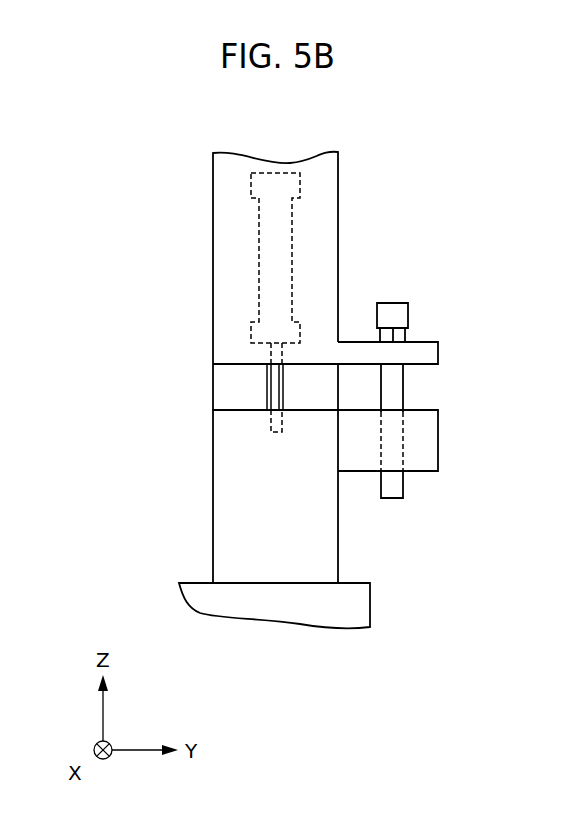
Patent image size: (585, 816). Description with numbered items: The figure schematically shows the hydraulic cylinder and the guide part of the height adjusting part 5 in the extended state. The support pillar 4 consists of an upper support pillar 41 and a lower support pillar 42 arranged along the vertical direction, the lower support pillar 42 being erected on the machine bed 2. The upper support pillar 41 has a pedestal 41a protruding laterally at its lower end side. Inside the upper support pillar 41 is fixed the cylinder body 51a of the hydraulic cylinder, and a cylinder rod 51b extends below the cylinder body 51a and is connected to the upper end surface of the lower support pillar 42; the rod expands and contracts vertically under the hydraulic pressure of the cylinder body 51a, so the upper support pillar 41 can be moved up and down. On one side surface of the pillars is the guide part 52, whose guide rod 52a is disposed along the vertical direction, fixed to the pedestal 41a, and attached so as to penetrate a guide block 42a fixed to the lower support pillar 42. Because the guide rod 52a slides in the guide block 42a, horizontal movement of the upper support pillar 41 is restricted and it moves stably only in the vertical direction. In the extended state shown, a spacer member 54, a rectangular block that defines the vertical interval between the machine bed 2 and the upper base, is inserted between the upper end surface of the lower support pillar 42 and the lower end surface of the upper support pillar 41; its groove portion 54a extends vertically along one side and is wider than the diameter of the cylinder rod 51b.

The machine bed 2 is at (370, 603).
The support pillar 4 is at (332, 367).
The upper support pillar 41 is at (338, 213).
The pedestal 41a is at (425, 340).
The lower support pillar 42 is at (338, 530).
The guide block 42a is at (438, 446).
The height adjusting part 5 is at (473, 378).
The cylinder body 51a is at (257, 238).
The cylinder rod 51b is at (283, 372).
The guide part 52 is at (479, 400).
The guide rod 52a is at (405, 387).
The spacer member 54 is at (213, 382).
The groove portion 54a is at (268, 391).